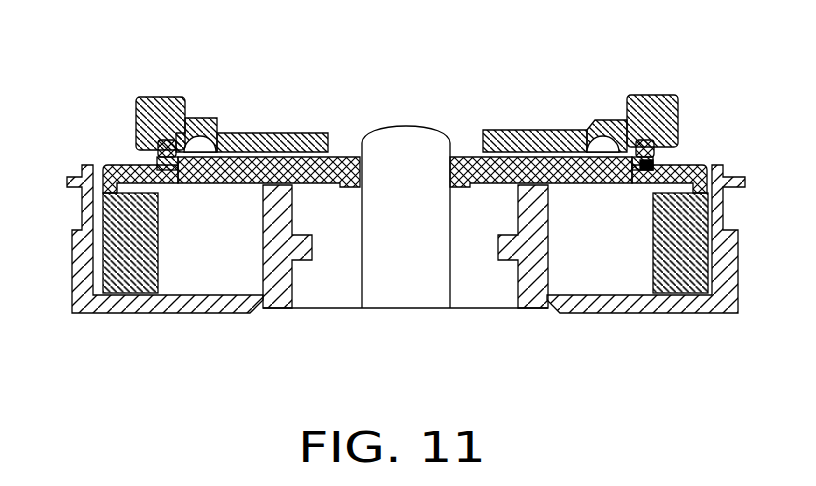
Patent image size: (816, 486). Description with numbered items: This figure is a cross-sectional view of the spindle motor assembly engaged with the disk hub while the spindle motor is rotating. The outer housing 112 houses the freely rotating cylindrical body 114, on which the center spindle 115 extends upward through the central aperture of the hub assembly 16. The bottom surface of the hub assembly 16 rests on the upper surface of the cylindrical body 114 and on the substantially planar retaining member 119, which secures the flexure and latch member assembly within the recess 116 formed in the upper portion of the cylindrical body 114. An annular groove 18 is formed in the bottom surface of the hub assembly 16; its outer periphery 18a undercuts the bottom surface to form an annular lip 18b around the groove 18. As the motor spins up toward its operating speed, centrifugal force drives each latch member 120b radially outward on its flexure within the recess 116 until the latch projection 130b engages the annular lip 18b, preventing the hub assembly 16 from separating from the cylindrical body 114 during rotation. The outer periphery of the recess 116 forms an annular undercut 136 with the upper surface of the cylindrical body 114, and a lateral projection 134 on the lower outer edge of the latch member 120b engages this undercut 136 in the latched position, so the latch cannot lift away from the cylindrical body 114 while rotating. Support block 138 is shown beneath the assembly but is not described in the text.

The hub assembly 16 is at (137, 113).
The annular groove 18 is at (215, 124).
The outer periphery of the annular groove 18a is at (203, 143).
The annular lip 18b is at (158, 152).
The retaining member 119 is at (295, 132).
The latch member 120b is at (557, 128).
The latch projection 130b is at (602, 122).
The cylindrical body 114 is at (687, 163).
The outer housing 112 is at (747, 262).
The center spindle 115 is at (423, 190).
The annular undercut 136 is at (170, 182).
The recess 116 is at (228, 184).
The lateral projection 134 is at (647, 170).
The support block 138 is at (405, 246).